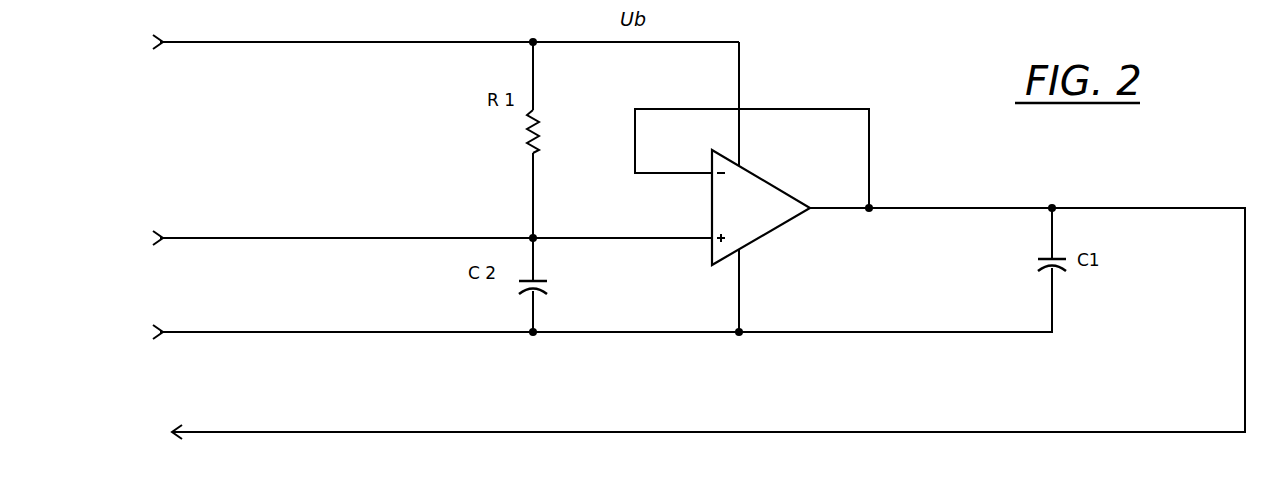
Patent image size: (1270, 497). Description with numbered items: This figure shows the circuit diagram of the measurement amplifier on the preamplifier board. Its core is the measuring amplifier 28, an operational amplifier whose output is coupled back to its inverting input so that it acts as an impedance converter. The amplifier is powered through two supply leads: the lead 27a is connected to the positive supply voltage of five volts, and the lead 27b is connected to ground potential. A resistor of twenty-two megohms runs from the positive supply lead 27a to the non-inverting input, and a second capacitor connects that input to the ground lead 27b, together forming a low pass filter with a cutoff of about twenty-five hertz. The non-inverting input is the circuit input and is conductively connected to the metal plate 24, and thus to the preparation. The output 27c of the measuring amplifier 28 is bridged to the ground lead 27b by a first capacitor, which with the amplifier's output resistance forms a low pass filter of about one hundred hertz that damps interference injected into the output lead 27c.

The positive supply lead 27a is at (176, 44).
The metal plate 24 is at (198, 240).
The ground lead 27b is at (189, 334).
The output lead 27c is at (708, 343).
The measuring amplifier 28 is at (779, 226).